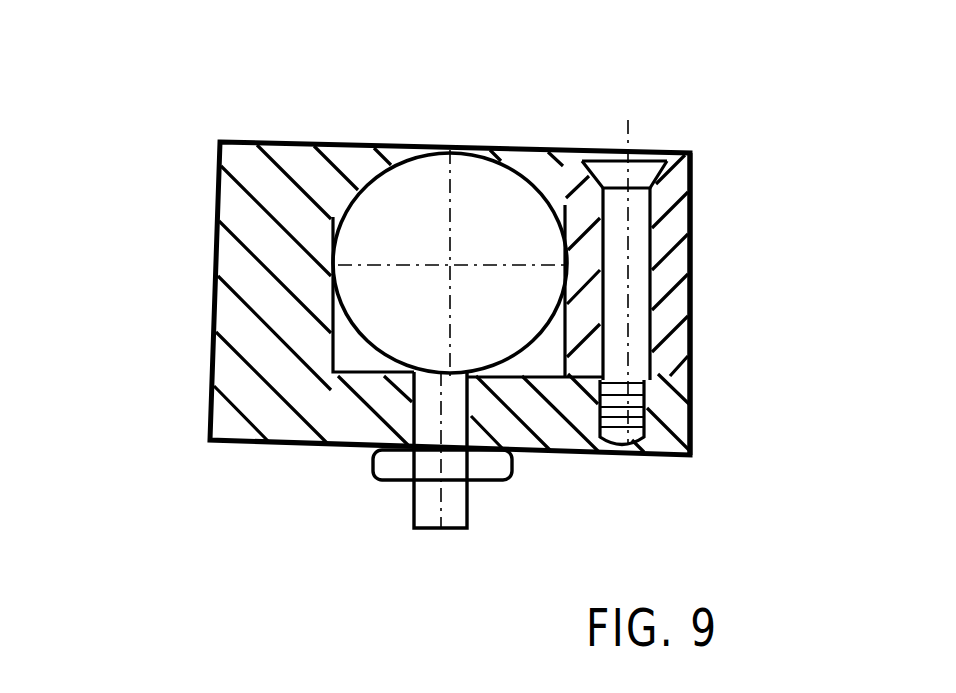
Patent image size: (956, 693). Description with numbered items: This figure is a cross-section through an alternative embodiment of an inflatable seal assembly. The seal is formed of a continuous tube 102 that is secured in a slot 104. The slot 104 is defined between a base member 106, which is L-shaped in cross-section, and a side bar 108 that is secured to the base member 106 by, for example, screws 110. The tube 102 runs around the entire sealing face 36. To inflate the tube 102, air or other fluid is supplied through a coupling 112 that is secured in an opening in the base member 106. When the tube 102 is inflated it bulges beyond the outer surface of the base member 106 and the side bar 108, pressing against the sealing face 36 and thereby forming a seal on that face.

The sealing face 36 is at (328, 135).
The continuous tube 102 is at (405, 145).
The slot 104 is at (357, 352).
The base member 106 is at (210, 435).
The side bar 108 is at (695, 172).
The screws 110 is at (650, 158).
The coupling 112 is at (405, 463).